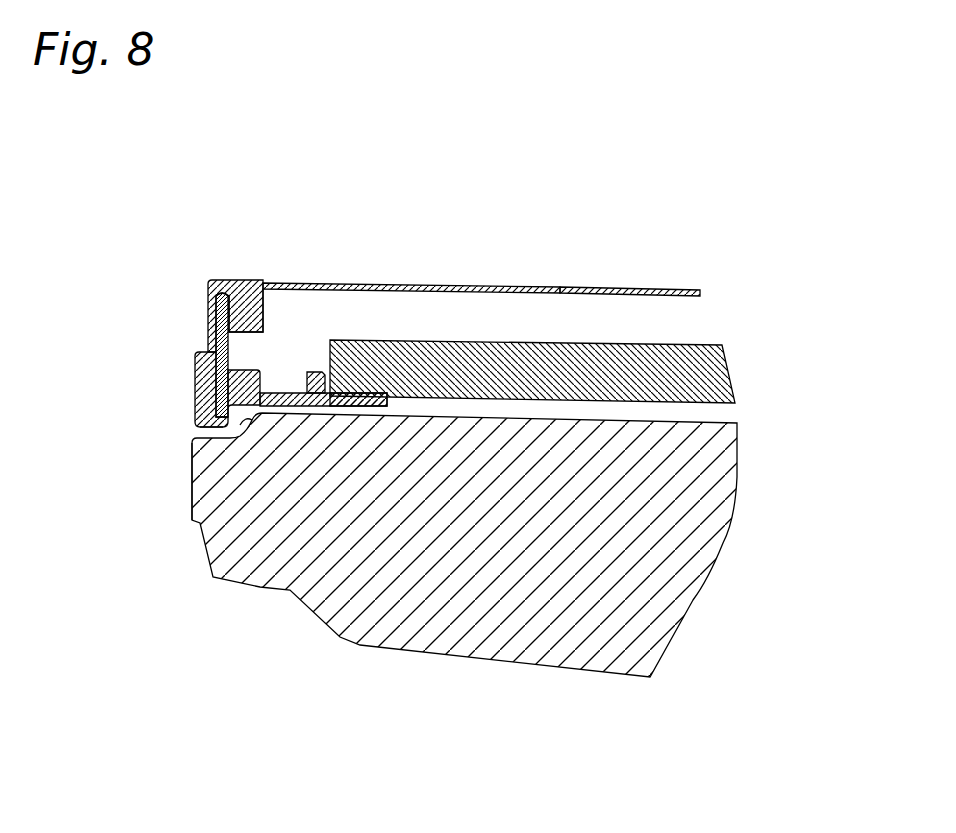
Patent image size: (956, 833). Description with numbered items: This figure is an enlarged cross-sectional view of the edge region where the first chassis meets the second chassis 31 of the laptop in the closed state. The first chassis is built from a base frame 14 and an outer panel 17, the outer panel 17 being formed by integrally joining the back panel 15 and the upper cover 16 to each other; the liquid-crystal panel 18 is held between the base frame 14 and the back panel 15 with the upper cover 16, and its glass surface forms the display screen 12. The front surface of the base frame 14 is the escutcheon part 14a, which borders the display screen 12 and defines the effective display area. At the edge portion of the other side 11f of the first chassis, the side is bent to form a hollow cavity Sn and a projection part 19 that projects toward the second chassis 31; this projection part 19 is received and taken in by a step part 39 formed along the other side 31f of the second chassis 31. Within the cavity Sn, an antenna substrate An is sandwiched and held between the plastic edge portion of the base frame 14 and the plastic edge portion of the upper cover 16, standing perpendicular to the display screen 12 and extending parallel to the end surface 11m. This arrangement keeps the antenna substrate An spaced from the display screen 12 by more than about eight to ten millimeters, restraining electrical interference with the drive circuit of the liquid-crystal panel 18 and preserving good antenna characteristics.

The other side 11f is at (207, 326).
The end surface 11m is at (198, 373).
The display screen 12 is at (710, 405).
The base frame 14 is at (290, 407).
The escutcheon part 14a is at (352, 408).
The back panel 15 is at (636, 251).
The upper cover 16 is at (457, 282).
The outer panel 17 is at (490, 225).
The liquid-crystal panel 18 is at (732, 378).
The projection part 19 is at (217, 432).
The second chassis 31 is at (533, 662).
The other side 31f is at (192, 477).
The step part 39 is at (247, 423).
The antenna substrate An is at (222, 297).
The cavity Sn is at (230, 350).